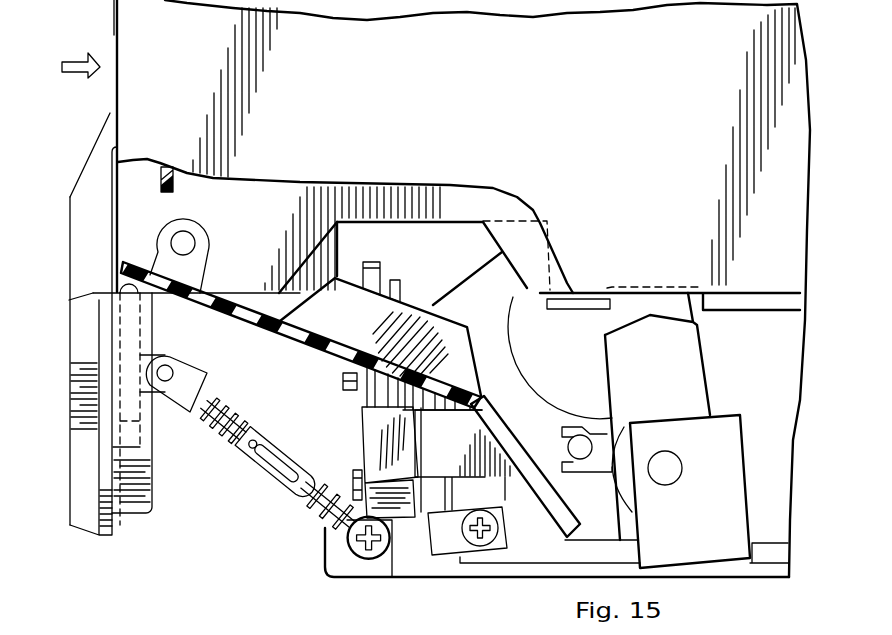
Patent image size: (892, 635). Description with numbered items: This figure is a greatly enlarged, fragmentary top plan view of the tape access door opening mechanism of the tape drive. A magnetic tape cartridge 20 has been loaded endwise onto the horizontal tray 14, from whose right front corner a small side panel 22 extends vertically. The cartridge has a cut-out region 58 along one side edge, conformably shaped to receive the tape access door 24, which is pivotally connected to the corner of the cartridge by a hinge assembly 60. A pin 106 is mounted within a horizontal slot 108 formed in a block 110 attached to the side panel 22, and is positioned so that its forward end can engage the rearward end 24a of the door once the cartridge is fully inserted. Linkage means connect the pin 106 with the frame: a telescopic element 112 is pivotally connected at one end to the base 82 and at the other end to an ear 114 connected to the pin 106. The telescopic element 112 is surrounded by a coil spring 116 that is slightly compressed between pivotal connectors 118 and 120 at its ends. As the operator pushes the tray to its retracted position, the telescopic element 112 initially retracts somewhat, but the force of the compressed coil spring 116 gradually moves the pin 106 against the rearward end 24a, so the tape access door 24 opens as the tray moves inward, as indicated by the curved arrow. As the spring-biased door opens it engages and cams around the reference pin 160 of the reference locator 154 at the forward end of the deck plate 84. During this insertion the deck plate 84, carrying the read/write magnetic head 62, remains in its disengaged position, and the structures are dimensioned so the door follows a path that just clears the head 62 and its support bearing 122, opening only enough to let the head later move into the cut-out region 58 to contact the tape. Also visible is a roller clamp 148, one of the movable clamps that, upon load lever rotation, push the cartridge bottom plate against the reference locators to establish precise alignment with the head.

The magnetic tape cartridge 20 is at (132, 23).
The tray 14 is at (108, 128).
The side panel 22 is at (87, 524).
The block 110 is at (147, 497).
The horizontal slot 108 is at (137, 427).
The ear 114 is at (160, 355).
The pin 106 is at (118, 283).
The hinge assembly 60 is at (193, 234).
The tape access door 24 is at (334, 349).
The rearward end of the tape access door 24a is at (148, 267).
The pivotal connector 118 is at (185, 378).
The coil spring 116 is at (240, 412).
The telescopic element 112 is at (264, 470).
The pivotal connector 120 is at (338, 538).
The base 82 is at (420, 565).
The deck plate 84 is at (543, 548).
The reference locator 154 is at (377, 424).
The reference pin 160 is at (377, 390).
The roller clamp 148 is at (399, 294).
The cut-out region 58 is at (483, 231).
The read/write magnetic head 62 is at (697, 367).
The support bearing 122 is at (622, 483).